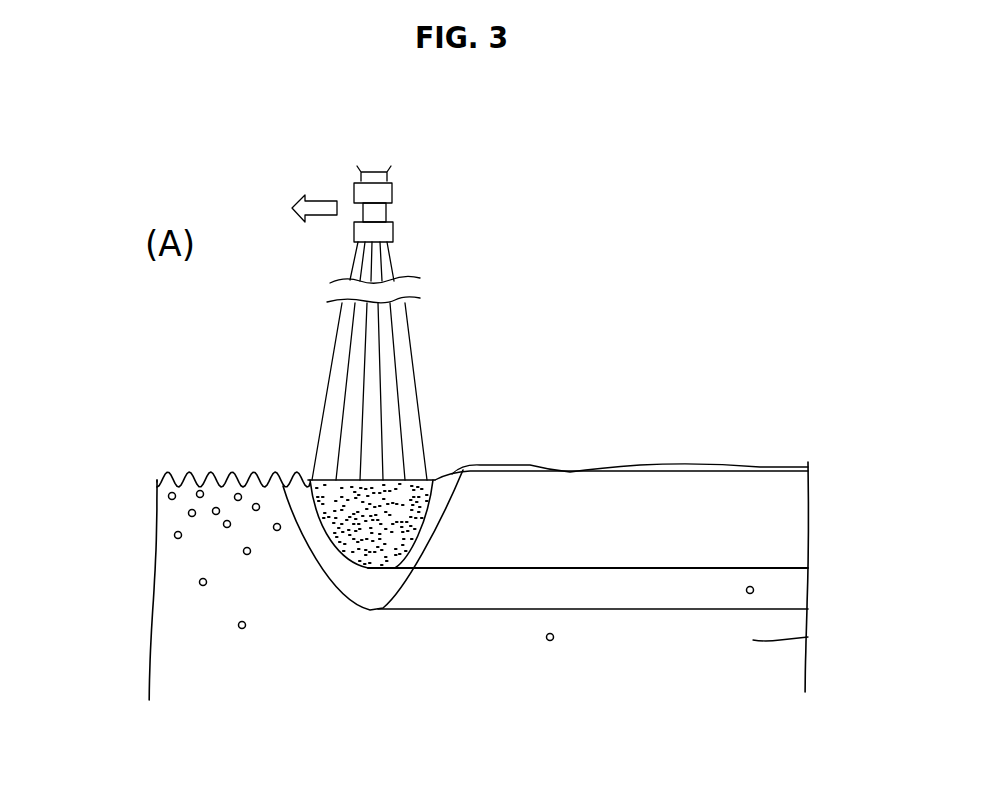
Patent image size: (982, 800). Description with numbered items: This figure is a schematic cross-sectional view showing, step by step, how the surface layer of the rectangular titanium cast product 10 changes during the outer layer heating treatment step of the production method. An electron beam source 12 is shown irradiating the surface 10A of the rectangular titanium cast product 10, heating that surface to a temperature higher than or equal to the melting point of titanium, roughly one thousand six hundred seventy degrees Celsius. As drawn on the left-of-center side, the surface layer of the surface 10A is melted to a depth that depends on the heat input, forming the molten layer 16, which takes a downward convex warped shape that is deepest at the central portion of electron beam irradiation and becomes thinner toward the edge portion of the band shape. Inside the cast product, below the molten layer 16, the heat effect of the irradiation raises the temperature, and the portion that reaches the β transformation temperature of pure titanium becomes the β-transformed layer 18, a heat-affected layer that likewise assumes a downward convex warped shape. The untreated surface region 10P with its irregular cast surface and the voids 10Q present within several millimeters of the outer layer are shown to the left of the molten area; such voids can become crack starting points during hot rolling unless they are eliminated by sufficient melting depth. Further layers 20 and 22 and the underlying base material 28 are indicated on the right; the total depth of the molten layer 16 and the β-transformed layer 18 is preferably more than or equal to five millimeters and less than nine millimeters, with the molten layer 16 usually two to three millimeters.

The rectangular titanium cast product 10 is at (777, 437).
The surface 10A is at (160, 452).
The surface irregularities 10P is at (232, 470).
The pores 10Q is at (196, 511).
The laser nozzle 12 is at (391, 231).
The molten layer 16 is at (415, 481).
The β-transformed layer 18 is at (348, 578).
The surface layer 20 is at (597, 500).
The hardened layer 22 is at (678, 587).
The base material 28 is at (808, 637).